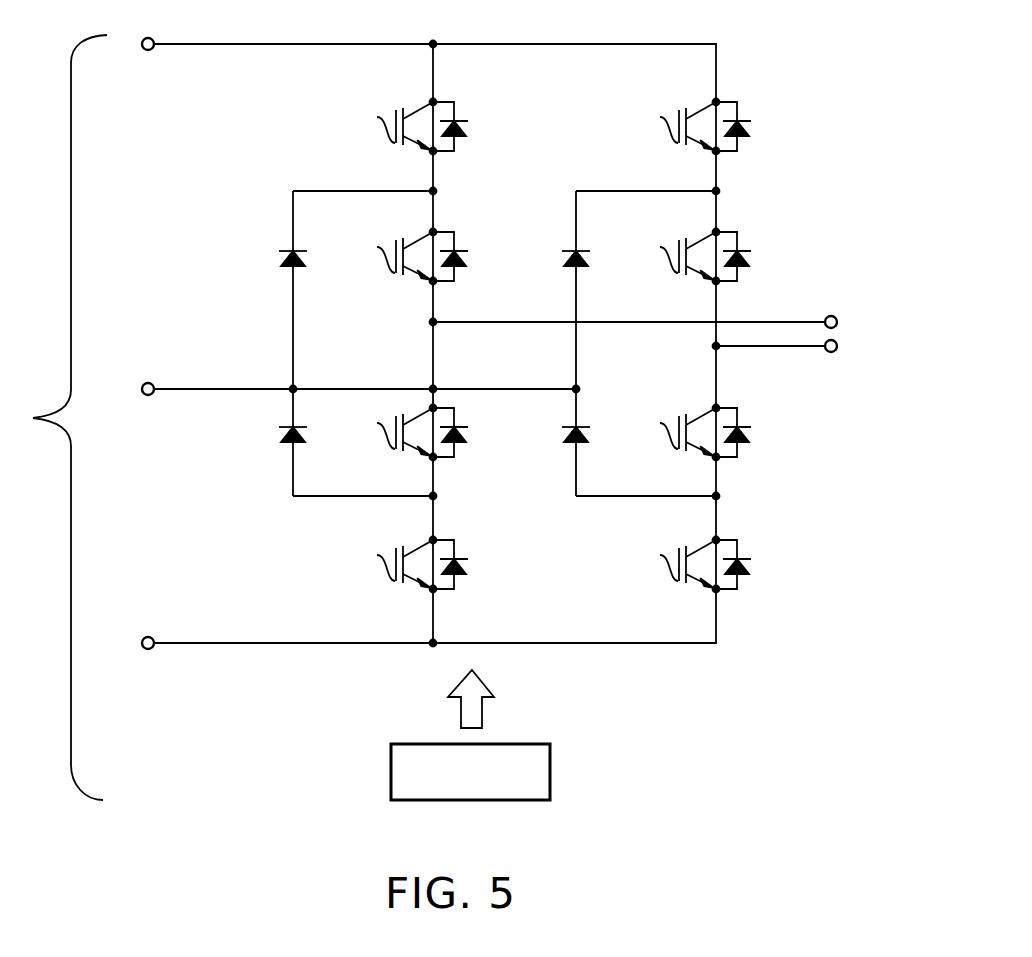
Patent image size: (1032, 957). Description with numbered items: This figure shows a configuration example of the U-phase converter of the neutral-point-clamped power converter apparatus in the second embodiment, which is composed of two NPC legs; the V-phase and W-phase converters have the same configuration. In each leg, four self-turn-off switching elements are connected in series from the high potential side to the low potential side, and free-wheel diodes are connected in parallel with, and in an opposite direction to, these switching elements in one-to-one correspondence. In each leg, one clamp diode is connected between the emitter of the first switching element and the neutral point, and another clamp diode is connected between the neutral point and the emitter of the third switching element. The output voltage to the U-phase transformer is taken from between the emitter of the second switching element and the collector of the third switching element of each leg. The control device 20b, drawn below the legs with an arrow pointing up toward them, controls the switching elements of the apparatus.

The control device 20b is at (550, 775).